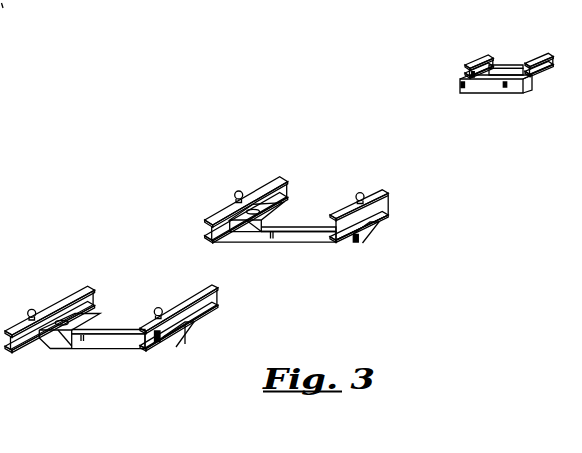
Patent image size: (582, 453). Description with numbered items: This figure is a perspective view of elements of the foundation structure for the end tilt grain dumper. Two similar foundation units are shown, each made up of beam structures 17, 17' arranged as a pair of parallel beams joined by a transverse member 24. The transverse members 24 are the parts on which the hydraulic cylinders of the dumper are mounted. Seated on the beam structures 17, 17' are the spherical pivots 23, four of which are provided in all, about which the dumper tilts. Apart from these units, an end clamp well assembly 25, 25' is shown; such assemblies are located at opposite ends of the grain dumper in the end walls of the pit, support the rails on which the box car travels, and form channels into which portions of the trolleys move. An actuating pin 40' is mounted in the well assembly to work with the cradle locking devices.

The beam structure 17 is at (264, 288).
The beam structure 17' is at (146, 248).
The spherical pivot 23 is at (235, 192).
The transverse member 24 is at (298, 227).
The end clamp well assembly 25 is at (511, 55).
The end clamp well assembly 25' is at (509, 44).
The actuating pin 40' is at (477, 75).